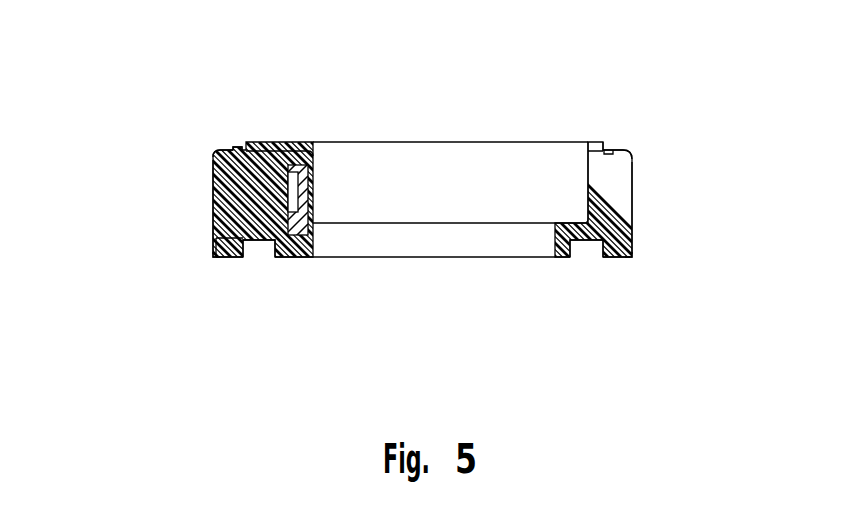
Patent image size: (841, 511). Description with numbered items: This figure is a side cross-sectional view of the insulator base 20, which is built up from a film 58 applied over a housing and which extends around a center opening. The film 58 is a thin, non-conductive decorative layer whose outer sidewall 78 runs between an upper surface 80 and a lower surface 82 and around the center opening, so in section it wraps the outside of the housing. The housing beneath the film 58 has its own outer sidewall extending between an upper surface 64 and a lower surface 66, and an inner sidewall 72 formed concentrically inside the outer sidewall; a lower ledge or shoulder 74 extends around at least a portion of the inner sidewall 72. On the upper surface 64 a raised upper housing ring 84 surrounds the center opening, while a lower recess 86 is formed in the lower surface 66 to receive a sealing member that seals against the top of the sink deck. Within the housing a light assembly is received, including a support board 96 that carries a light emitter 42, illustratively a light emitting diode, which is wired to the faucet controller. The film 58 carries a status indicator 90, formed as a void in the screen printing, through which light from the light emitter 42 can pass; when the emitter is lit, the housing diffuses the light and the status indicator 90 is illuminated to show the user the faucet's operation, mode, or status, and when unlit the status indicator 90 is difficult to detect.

The insulator base 20 is at (150, 118).
The light emitter 42 is at (310, 143).
The film 58 is at (633, 183).
The upper surface 64 is at (300, 163).
The lower surface 66 is at (217, 263).
The inner sidewall 72 is at (587, 170).
The lower ledge or shoulder 74 is at (568, 223).
The outer sidewall 78 is at (212, 177).
The upper surface 80 is at (226, 149).
The lower surface 82 is at (212, 258).
The raised upper housing ring 84 is at (243, 146).
The lower recess 86 is at (262, 272).
The status indicator 90 is at (196, 205).
The support board 96 is at (313, 200).